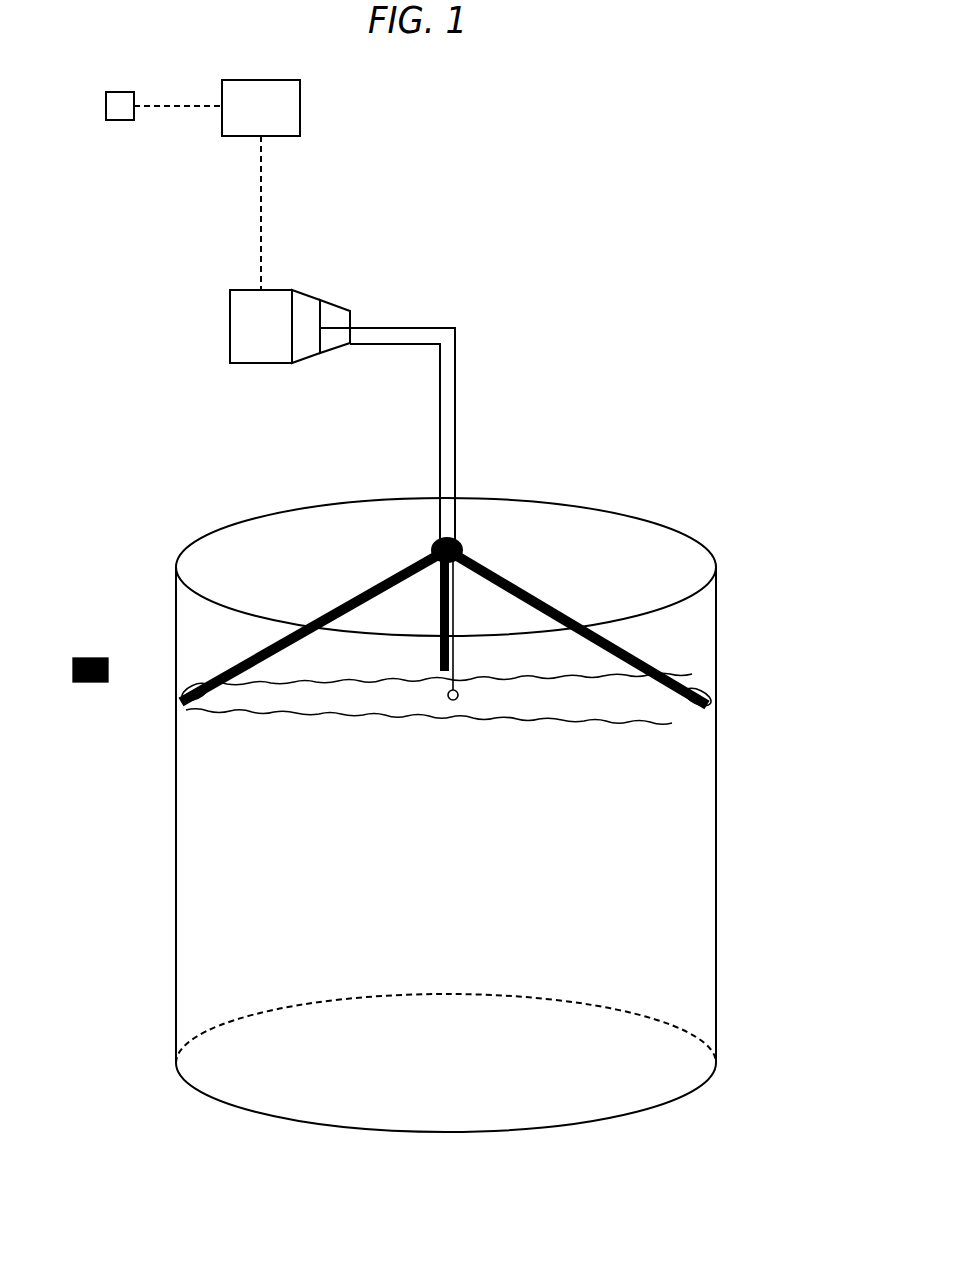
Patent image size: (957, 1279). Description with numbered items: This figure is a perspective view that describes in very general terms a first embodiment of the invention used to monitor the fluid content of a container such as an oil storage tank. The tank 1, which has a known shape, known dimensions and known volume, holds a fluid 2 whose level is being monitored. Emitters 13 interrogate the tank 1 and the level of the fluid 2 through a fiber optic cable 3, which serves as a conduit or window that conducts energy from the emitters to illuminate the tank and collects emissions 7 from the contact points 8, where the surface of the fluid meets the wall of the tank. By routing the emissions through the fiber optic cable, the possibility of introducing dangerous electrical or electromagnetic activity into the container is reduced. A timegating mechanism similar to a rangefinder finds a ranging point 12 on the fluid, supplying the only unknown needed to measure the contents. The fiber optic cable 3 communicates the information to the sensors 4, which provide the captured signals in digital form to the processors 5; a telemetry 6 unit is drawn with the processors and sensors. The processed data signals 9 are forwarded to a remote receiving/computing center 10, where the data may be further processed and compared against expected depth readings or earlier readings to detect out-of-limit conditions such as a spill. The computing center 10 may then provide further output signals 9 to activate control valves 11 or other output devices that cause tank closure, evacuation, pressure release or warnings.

The tank 1 is at (183, 1083).
The fluid 2 is at (691, 717).
The fiber optic cable 3 is at (450, 382).
The sensors 4 is at (333, 317).
The processors 5 is at (303, 308).
The telemetry 6 is at (243, 324).
The emissions 7 is at (86, 638).
The contact points 8 is at (695, 708).
The signals 9 is at (256, 207).
The receiving/computing center 10 is at (283, 111).
The control valves 11 is at (143, 45).
The ranging point 12 is at (465, 692).
The emitters 13 is at (331, 334).